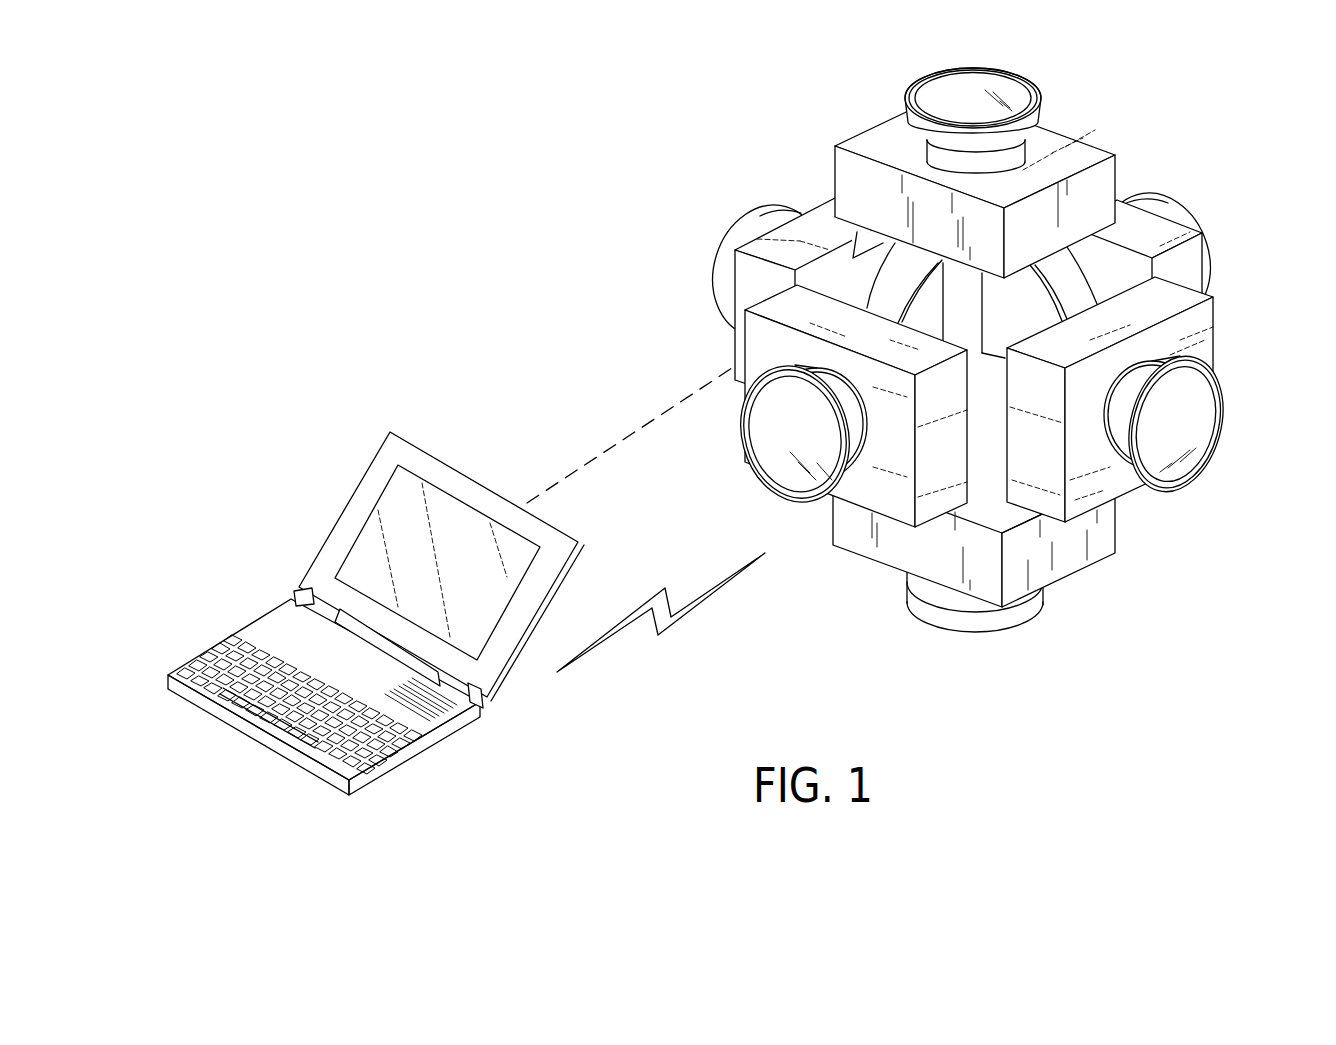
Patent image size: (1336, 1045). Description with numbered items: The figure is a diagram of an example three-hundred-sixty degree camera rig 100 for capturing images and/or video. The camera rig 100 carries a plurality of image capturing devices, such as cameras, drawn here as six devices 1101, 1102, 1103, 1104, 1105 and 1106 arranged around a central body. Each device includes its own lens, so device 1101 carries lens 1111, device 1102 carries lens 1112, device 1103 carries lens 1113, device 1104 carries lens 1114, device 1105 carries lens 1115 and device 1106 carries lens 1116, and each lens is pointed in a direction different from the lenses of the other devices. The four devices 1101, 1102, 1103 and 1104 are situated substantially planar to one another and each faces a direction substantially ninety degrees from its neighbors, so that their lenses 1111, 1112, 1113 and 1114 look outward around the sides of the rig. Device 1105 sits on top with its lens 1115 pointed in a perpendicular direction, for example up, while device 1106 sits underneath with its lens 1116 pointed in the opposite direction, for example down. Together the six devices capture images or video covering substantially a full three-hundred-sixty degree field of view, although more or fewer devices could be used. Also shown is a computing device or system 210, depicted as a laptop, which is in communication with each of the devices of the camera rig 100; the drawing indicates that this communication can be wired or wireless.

The 360 degree camera rig 100 is at (968, 350).
The device 1101 is at (1205, 355).
The device 1102 is at (1190, 248).
The device 1103 is at (753, 270).
The device 1104 is at (770, 343).
The device 1105 is at (1108, 153).
The device 1106 is at (1058, 562).
The lens 1111 is at (1200, 480).
The lens 1112 is at (1167, 202).
The lens 1113 is at (764, 213).
The lens 1114 is at (779, 496).
The lens 1115 is at (986, 68).
The lens 1116 is at (936, 628).
The computing device 210 is at (354, 495).